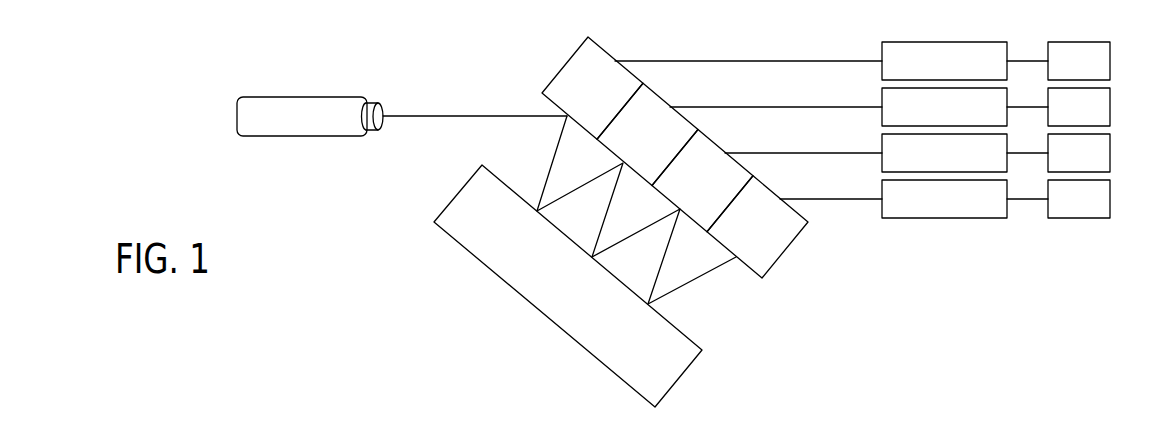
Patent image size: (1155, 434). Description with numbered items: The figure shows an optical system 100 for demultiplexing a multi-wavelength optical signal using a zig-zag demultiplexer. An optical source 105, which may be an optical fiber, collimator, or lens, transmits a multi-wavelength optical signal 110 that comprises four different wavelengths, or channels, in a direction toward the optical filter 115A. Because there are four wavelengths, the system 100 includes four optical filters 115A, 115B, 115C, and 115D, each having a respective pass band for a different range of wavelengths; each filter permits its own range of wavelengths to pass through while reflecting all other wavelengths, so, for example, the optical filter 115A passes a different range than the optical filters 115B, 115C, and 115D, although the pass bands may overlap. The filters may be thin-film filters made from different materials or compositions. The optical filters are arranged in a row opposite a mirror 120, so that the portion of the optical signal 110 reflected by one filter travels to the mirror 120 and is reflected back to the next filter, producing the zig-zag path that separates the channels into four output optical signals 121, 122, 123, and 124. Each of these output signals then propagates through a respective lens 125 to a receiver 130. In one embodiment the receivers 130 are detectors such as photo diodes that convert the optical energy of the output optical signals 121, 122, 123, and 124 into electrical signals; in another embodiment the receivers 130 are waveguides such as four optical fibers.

The optical system 100 is at (230, 78).
The optical source 105 is at (318, 130).
The multi-wavelength optical signal 110 is at (426, 114).
The optical filter 115A is at (618, 97).
The optical filter 115B is at (673, 144).
The optical filter 115C is at (728, 191).
The optical filter 115D is at (783, 237).
The mirror 120 is at (577, 295).
The output optical signal 121 is at (813, 58).
The output optical signal 122 is at (813, 104).
The output optical signal 123 is at (813, 150).
The output optical signal 124 is at (813, 196).
The lens 125 is at (995, 73).
The receiver 130 is at (1098, 73).